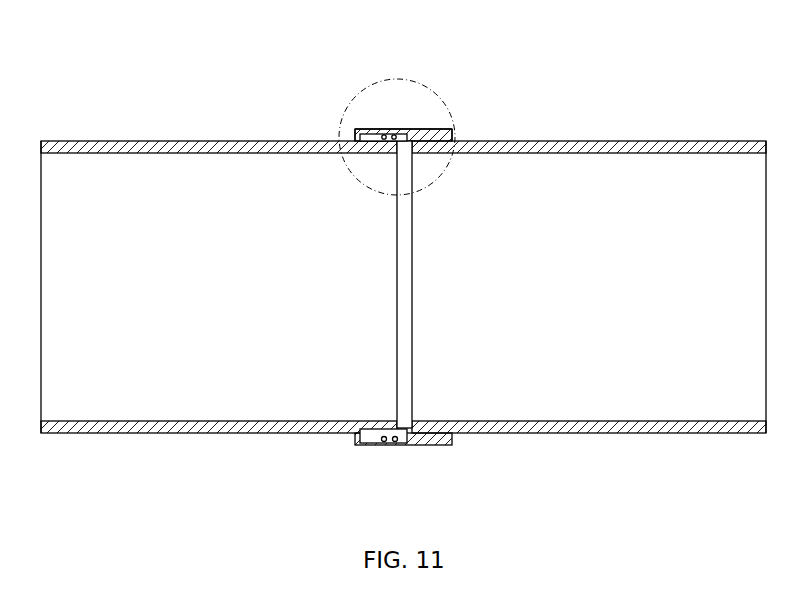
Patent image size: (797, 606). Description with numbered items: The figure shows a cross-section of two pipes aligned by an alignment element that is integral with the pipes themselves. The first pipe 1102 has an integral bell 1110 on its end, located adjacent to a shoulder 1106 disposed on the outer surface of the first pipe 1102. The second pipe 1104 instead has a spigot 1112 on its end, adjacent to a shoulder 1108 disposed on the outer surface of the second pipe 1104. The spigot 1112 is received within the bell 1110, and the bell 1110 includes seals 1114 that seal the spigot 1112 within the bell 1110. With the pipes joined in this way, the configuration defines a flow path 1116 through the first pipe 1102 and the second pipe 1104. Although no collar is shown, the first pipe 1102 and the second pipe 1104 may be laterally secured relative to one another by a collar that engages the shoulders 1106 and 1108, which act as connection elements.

The first pipe 1102 is at (115, 137).
The second pipe 1104 is at (663, 137).
The shoulder 1106 is at (347, 137).
The shoulder 1108 is at (455, 134).
The integral bell 1110 is at (358, 123).
The spigot 1112 is at (418, 130).
The seals 1114 is at (388, 128).
The flow path 1116 is at (333, 355).